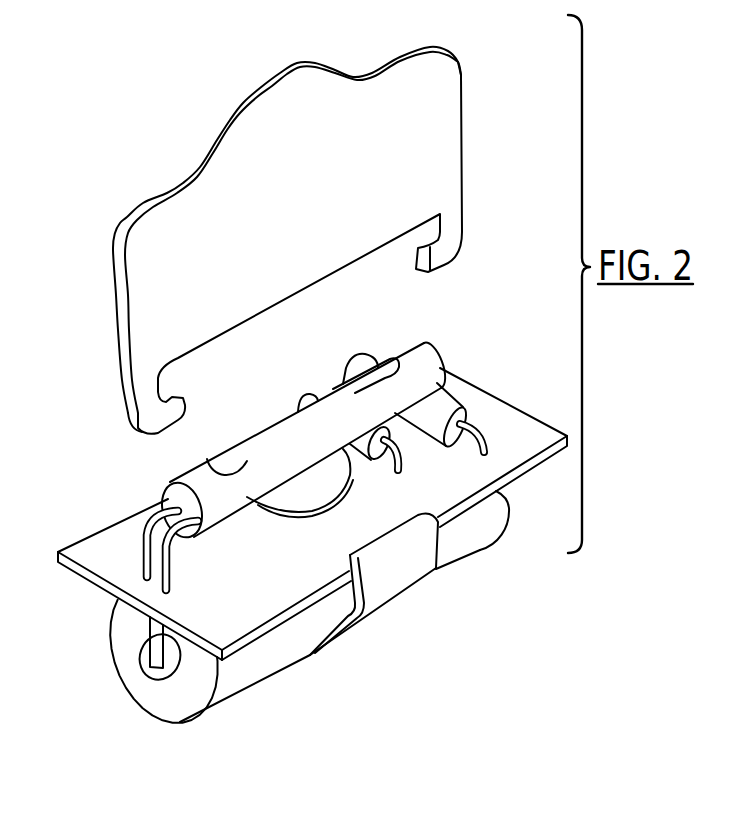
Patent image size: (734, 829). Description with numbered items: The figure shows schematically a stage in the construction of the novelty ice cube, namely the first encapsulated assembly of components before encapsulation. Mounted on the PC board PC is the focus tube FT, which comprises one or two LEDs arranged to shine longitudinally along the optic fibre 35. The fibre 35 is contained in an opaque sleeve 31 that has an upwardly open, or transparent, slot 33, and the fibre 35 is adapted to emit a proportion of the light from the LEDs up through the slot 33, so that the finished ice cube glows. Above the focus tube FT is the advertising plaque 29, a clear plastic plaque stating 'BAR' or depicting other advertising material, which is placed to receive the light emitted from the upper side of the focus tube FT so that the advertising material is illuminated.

The advertising plaque 29 is at (478, 123).
The opaque sleeve 31 is at (222, 502).
The slot 33 is at (337, 393).
The optic fibre 35 is at (250, 450).
The focus tube FT is at (312, 448).
The PC board PC is at (522, 422).